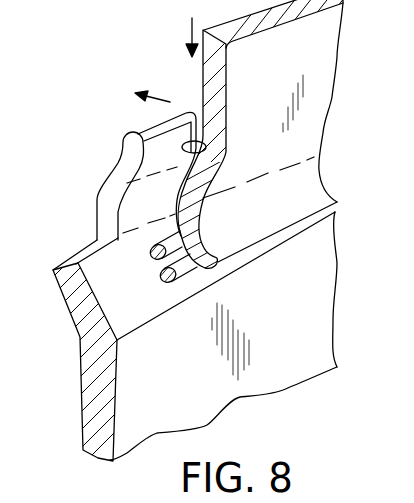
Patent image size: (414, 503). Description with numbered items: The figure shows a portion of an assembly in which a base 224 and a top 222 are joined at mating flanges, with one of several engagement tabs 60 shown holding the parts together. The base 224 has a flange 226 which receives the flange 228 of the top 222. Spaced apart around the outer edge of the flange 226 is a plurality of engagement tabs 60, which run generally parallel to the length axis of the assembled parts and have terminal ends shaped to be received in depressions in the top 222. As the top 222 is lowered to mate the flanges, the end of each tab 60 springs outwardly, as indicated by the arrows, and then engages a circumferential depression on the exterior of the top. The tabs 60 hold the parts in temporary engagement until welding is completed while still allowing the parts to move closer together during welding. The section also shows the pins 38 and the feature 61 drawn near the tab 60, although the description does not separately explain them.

The pins 38 is at (160, 276).
The engagement tab 60 is at (103, 207).
The clip pin opening 61 is at (196, 146).
The top 222 is at (328, 96).
The base 224 is at (318, 298).
The flange 226 is at (110, 303).
The flange 228 is at (313, 190).